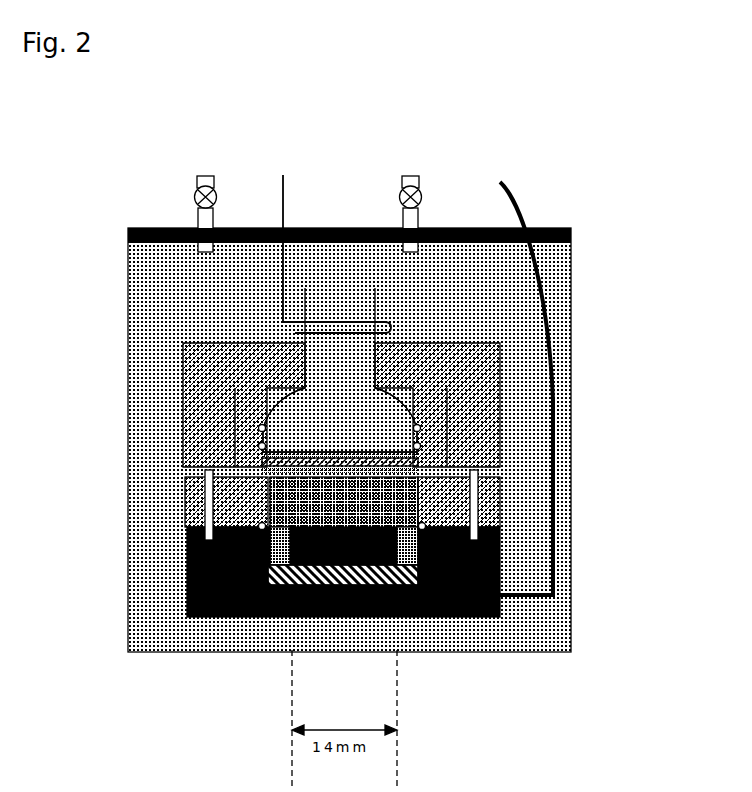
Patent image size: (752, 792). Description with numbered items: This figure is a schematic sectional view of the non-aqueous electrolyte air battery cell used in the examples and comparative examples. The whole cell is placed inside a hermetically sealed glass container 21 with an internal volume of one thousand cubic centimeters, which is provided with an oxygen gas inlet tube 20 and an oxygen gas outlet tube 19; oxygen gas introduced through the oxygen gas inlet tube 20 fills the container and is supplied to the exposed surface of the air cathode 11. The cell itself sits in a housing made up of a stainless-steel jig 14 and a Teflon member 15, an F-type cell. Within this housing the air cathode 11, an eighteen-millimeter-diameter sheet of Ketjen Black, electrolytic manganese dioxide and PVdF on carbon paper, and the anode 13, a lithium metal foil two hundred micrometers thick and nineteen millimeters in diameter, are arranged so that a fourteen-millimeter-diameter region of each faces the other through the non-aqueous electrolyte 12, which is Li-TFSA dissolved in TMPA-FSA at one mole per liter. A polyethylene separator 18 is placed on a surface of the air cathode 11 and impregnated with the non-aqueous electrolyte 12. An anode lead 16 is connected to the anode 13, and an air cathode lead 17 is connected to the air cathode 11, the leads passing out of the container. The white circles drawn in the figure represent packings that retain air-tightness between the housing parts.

The air cathode 11 is at (240, 466).
The non-aqueous electrolyte 12 is at (275, 515).
The anode 13 is at (342, 582).
The stainless-steel jig 14 is at (210, 595).
The Teflon member 15 is at (195, 395).
The anode lead 16 is at (515, 193).
The air cathode lead 17 is at (285, 197).
The separator 18 is at (455, 465).
The oxygen gas outlet tube 19 is at (404, 175).
The oxygen gas inlet tube 20 is at (201, 175).
The glass container 21 is at (568, 290).